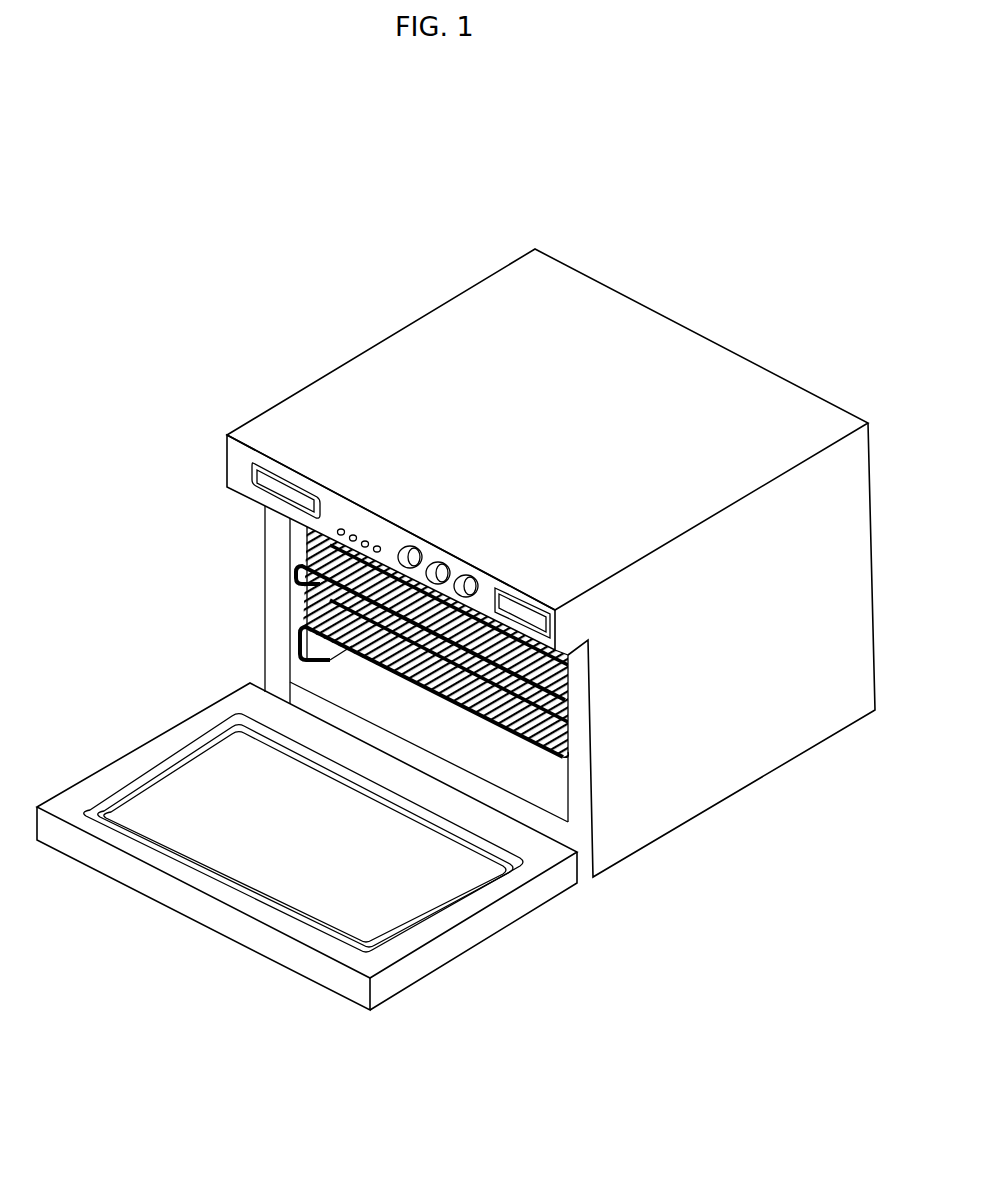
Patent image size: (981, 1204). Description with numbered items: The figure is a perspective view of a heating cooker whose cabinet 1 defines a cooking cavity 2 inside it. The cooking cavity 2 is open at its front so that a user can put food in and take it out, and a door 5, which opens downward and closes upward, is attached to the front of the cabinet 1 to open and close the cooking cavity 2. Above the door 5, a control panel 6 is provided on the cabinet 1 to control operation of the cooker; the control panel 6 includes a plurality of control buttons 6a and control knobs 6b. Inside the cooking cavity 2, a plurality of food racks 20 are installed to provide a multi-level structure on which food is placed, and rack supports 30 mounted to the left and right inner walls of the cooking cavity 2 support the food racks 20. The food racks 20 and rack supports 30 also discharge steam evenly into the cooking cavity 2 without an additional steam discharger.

The cabinet 1 is at (702, 286).
The cooking cavity 2 is at (508, 767).
The door 5 is at (472, 938).
The control panel 6 is at (232, 463).
The control buttons 6a is at (308, 538).
The control knobs 6b is at (453, 573).
The food racks 20 is at (285, 570).
The rack supports 30 is at (292, 648).